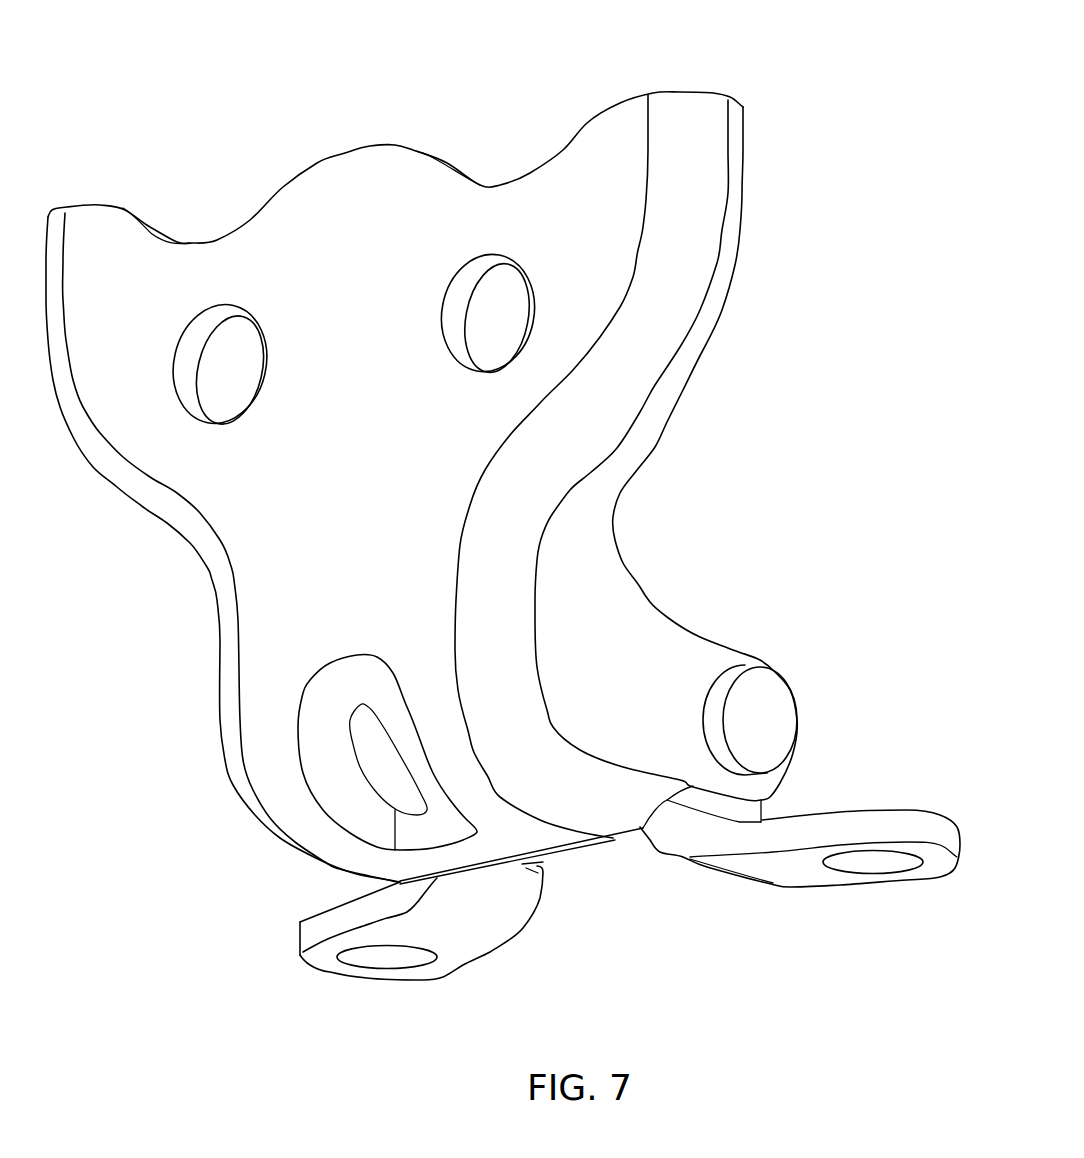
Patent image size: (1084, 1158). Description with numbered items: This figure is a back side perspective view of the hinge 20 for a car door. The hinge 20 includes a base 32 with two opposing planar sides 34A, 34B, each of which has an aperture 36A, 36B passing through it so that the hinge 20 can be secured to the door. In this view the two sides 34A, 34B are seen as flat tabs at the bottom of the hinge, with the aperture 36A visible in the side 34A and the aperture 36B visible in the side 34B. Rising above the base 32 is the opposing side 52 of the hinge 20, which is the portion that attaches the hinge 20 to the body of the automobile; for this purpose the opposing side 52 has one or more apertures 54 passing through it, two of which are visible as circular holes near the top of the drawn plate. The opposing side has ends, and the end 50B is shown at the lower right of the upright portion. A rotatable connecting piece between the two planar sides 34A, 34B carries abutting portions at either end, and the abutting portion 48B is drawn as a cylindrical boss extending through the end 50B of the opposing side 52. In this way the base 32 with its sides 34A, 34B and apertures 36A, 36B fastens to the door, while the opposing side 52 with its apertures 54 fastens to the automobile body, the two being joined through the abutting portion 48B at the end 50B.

The hinge 20 is at (503, 520).
The base 32 is at (318, 955).
The side 34A is at (399, 948).
The side 34B is at (800, 843).
The aperture 36A is at (388, 960).
The aperture 36B is at (875, 867).
The abutting portion 48B is at (777, 700).
The end 50B is at (630, 648).
The opposing side 52 is at (633, 213).
The apertures 54 is at (233, 340).